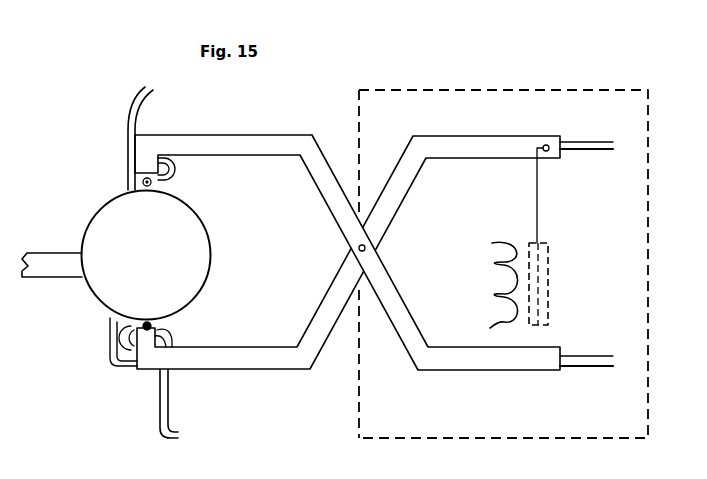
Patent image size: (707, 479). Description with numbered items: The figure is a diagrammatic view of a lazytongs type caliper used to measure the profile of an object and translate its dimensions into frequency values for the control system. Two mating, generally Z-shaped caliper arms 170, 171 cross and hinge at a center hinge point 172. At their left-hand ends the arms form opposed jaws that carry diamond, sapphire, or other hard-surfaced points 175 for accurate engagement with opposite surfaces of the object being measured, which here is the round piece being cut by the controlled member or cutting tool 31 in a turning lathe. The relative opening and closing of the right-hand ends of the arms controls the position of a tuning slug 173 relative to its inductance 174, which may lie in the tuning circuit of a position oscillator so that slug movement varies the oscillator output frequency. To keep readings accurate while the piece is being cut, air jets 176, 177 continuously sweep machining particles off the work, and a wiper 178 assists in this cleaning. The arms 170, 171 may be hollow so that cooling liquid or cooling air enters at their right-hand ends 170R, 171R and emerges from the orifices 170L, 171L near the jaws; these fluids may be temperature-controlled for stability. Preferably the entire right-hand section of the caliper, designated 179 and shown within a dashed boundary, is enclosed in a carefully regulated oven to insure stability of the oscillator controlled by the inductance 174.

The cutting tool 31 is at (43, 250).
The caliper arm 170 is at (266, 144).
The caliper arm 171 is at (273, 357).
The orifice 170L is at (170, 185).
The orifice 171L is at (122, 345).
The cooling fluid inlet 170R is at (583, 361).
The cooling fluid inlet 171R is at (593, 152).
The center hinge point 172 is at (366, 249).
The tuning slug 173 is at (549, 307).
The inductance 174 is at (505, 241).
The hard-surfaced points 175 is at (147, 187).
The air jet 176 is at (128, 139).
The air jet 177 is at (158, 418).
The wiper 178 is at (112, 326).
The enclosed caliper section 179 is at (505, 90).